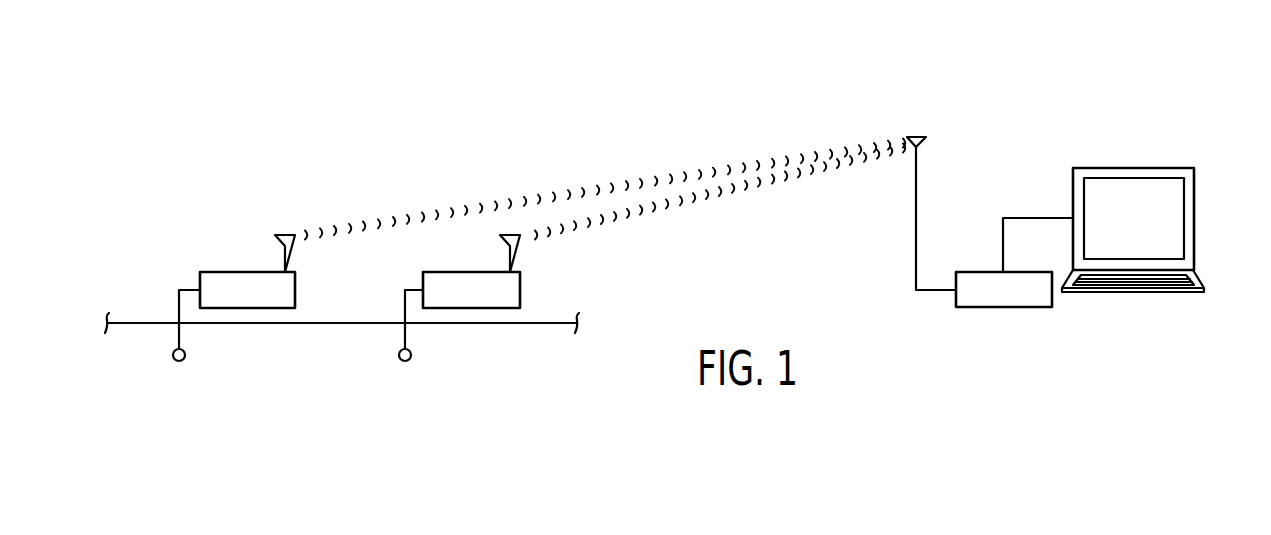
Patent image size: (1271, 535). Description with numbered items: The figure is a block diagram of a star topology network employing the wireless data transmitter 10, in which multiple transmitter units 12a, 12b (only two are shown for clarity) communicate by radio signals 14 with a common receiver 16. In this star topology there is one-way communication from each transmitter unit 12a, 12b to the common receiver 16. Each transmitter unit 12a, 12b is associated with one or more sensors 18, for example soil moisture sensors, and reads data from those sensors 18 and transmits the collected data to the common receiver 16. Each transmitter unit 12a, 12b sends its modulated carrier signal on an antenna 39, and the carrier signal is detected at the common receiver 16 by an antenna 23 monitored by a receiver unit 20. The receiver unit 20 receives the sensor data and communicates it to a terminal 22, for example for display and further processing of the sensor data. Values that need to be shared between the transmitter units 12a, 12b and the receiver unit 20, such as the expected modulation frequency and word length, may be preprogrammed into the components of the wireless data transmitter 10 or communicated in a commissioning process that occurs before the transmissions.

The wireless data transmitter 10 is at (333, 141).
The transmitter unit 12a is at (295, 288).
The transmitter unit 12b is at (520, 288).
The antenna 39 is at (283, 253).
The sensors 18 is at (172, 358).
The radio signals 14 is at (592, 216).
The common receiver 16 is at (1055, 122).
The antenna 23 is at (915, 185).
The receiver unit 20 is at (980, 309).
The terminal 22 is at (1195, 193).